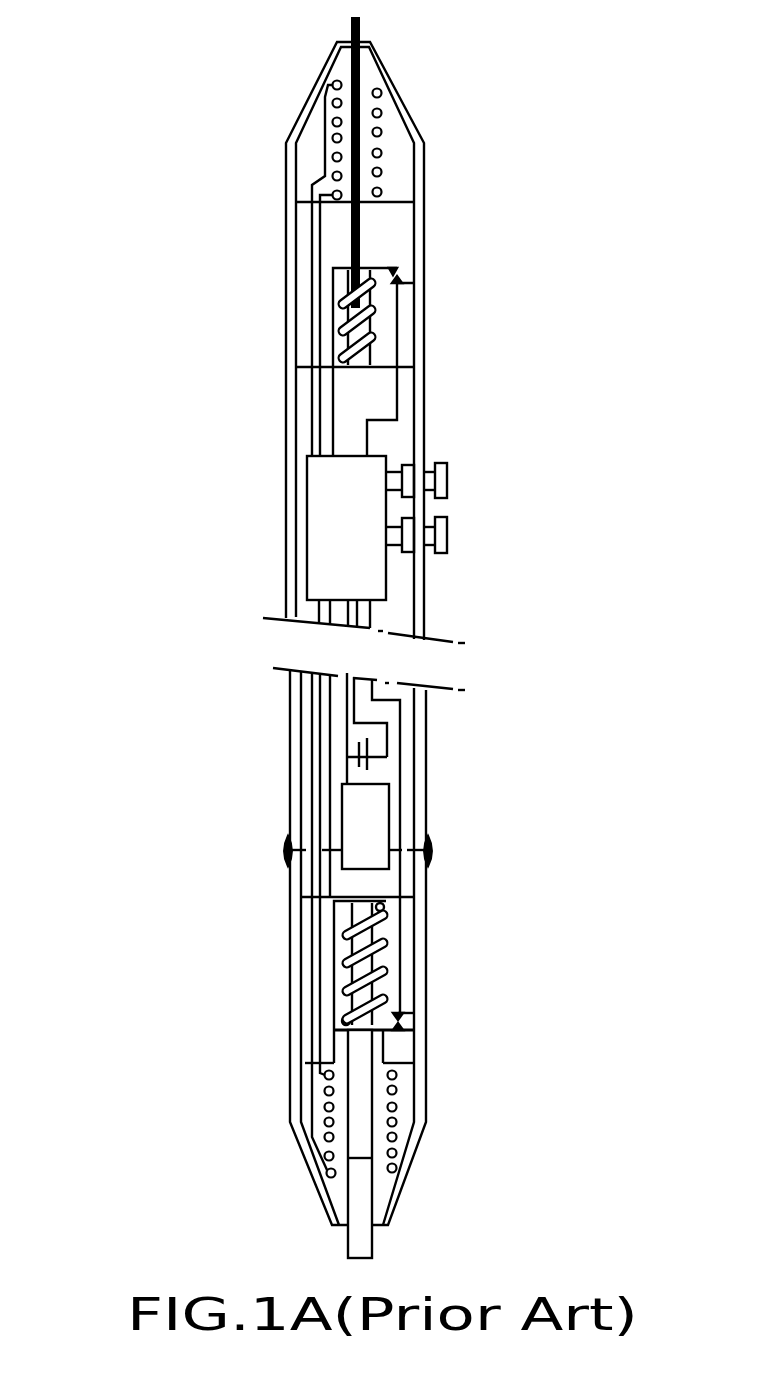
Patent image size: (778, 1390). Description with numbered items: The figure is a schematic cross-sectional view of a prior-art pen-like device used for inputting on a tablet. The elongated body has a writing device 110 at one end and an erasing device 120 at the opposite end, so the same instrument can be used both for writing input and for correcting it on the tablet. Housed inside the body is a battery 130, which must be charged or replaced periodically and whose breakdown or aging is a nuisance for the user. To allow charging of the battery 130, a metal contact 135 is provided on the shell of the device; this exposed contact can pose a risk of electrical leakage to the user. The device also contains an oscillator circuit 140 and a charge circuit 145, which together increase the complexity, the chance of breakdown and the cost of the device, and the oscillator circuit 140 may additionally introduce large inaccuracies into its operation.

The writing device 110 is at (226, 208).
The erasing device 120 is at (225, 1068).
The battery 130 is at (377, 753).
The metal contact 135 is at (287, 845).
The oscillator circuit 140 is at (332, 525).
The charge circuit 145 is at (375, 827).